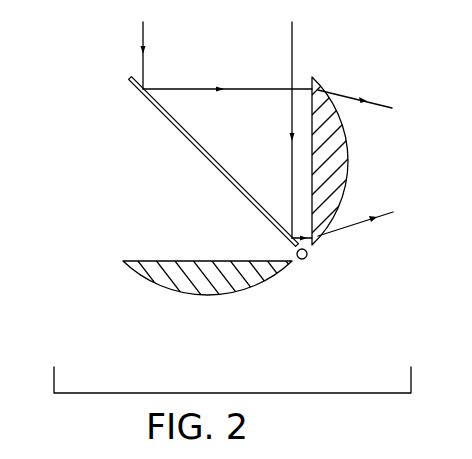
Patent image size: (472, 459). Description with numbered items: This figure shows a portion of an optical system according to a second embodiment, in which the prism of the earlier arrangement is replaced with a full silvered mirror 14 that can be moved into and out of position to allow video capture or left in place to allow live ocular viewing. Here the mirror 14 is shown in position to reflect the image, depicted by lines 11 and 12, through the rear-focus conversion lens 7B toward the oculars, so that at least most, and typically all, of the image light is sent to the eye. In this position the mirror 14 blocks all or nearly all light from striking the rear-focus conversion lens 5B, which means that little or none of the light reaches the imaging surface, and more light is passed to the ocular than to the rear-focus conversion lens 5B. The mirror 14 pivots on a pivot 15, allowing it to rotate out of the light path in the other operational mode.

The line 12 is at (143, 35).
The line 11 is at (292, 38).
The rear-focus conversion lens 7B is at (322, 105).
The mirror 14 is at (157, 113).
The pivot 15 is at (307, 257).
The rear-focus conversion lens 5B is at (262, 272).